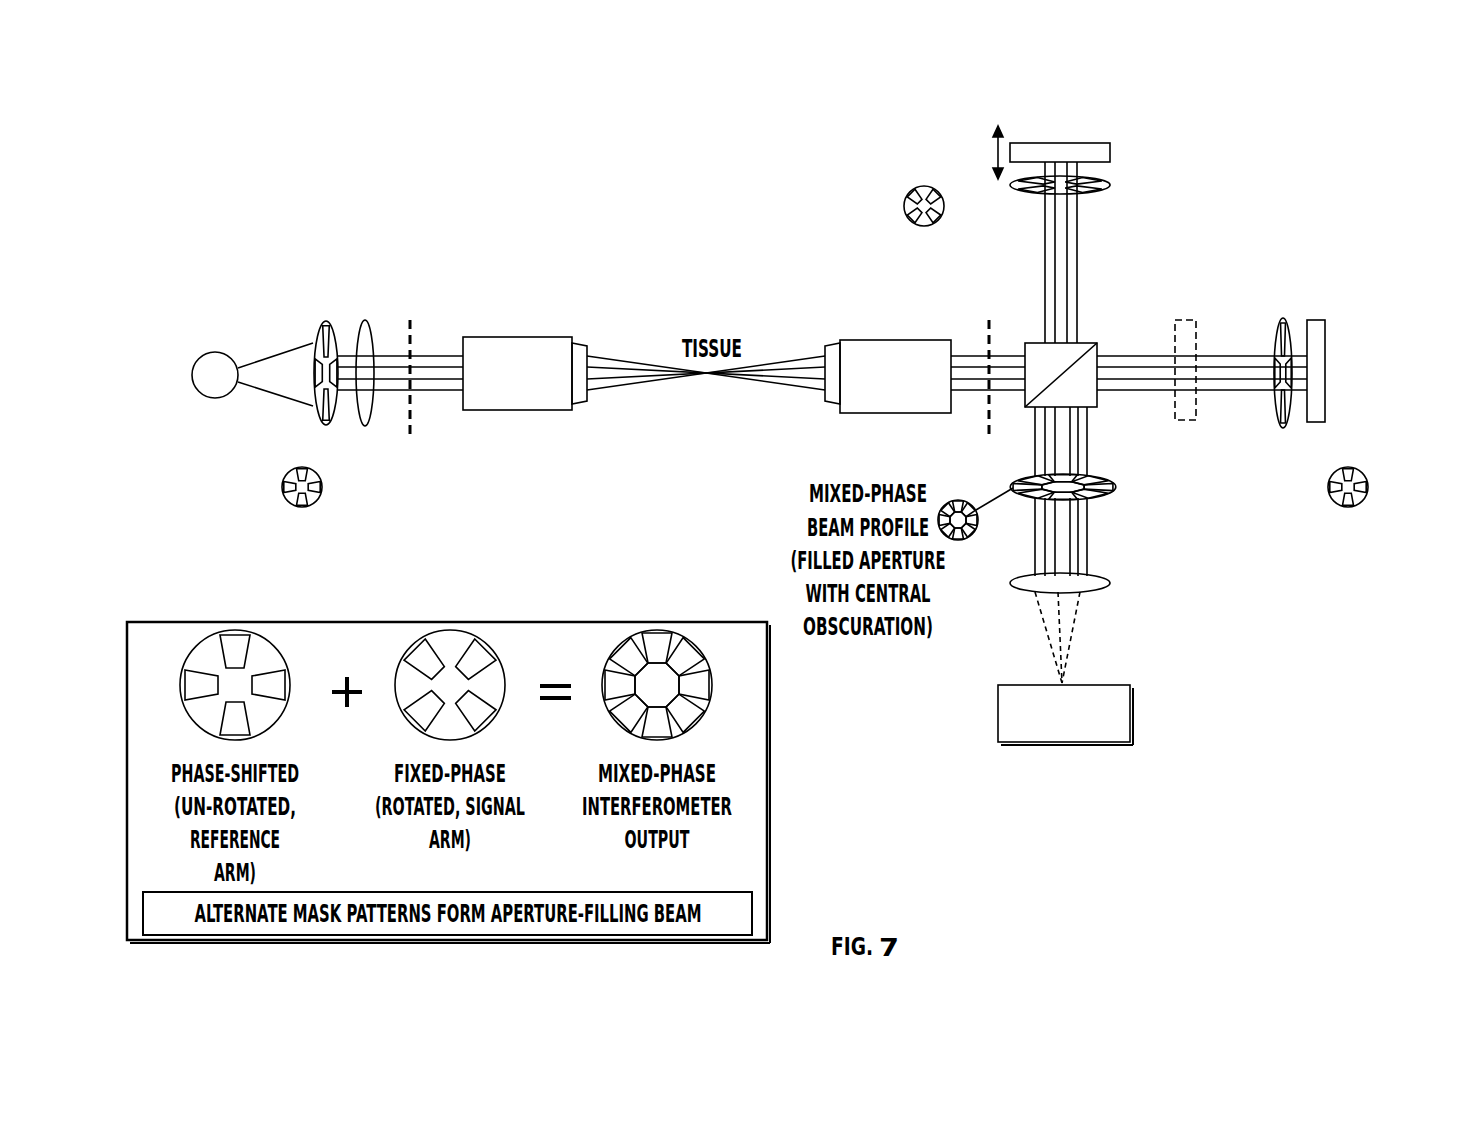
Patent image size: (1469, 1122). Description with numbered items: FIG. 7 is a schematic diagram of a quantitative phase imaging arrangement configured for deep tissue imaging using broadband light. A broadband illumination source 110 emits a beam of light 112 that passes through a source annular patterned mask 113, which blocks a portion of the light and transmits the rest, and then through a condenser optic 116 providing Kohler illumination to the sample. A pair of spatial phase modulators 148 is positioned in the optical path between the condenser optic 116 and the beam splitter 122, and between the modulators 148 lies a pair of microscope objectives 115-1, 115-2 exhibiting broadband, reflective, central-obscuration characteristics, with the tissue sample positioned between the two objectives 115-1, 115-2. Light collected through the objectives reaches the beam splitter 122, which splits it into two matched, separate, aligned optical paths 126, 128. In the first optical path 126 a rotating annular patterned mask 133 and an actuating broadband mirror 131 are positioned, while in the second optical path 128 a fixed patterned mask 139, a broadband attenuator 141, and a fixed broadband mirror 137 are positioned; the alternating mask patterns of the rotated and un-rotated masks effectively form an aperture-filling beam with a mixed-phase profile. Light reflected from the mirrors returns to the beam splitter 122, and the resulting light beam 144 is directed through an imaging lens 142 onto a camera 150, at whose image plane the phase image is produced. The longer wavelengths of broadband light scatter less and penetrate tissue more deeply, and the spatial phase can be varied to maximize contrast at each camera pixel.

The illumination source 110 is at (208, 352).
The beam of light 112 is at (304, 373).
The source annular patterned mask 113 is at (328, 424).
The microscope objective 115-1 is at (625, 479).
The microscope objective 115-2 is at (625, 479).
The condenser optic 116 is at (368, 320).
The beam splitter 122 is at (980, 297).
The first optical path 126 is at (1248, 253).
The second optical path 128 is at (1246, 255).
The actuating broadband mirror 131 is at (1110, 152).
The rotating annular patterned mask 133 is at (1012, 185).
The fixed broadband mirror 137 is at (1325, 373).
The fixed patterned mask 139 is at (1285, 426).
The broadband attenuator 141 is at (1186, 422).
The imaging lens 142 is at (1103, 588).
The light beam 144 is at (1044, 620).
The spatial phase modulators 148 is at (988, 325).
The camera 150 is at (1065, 715).